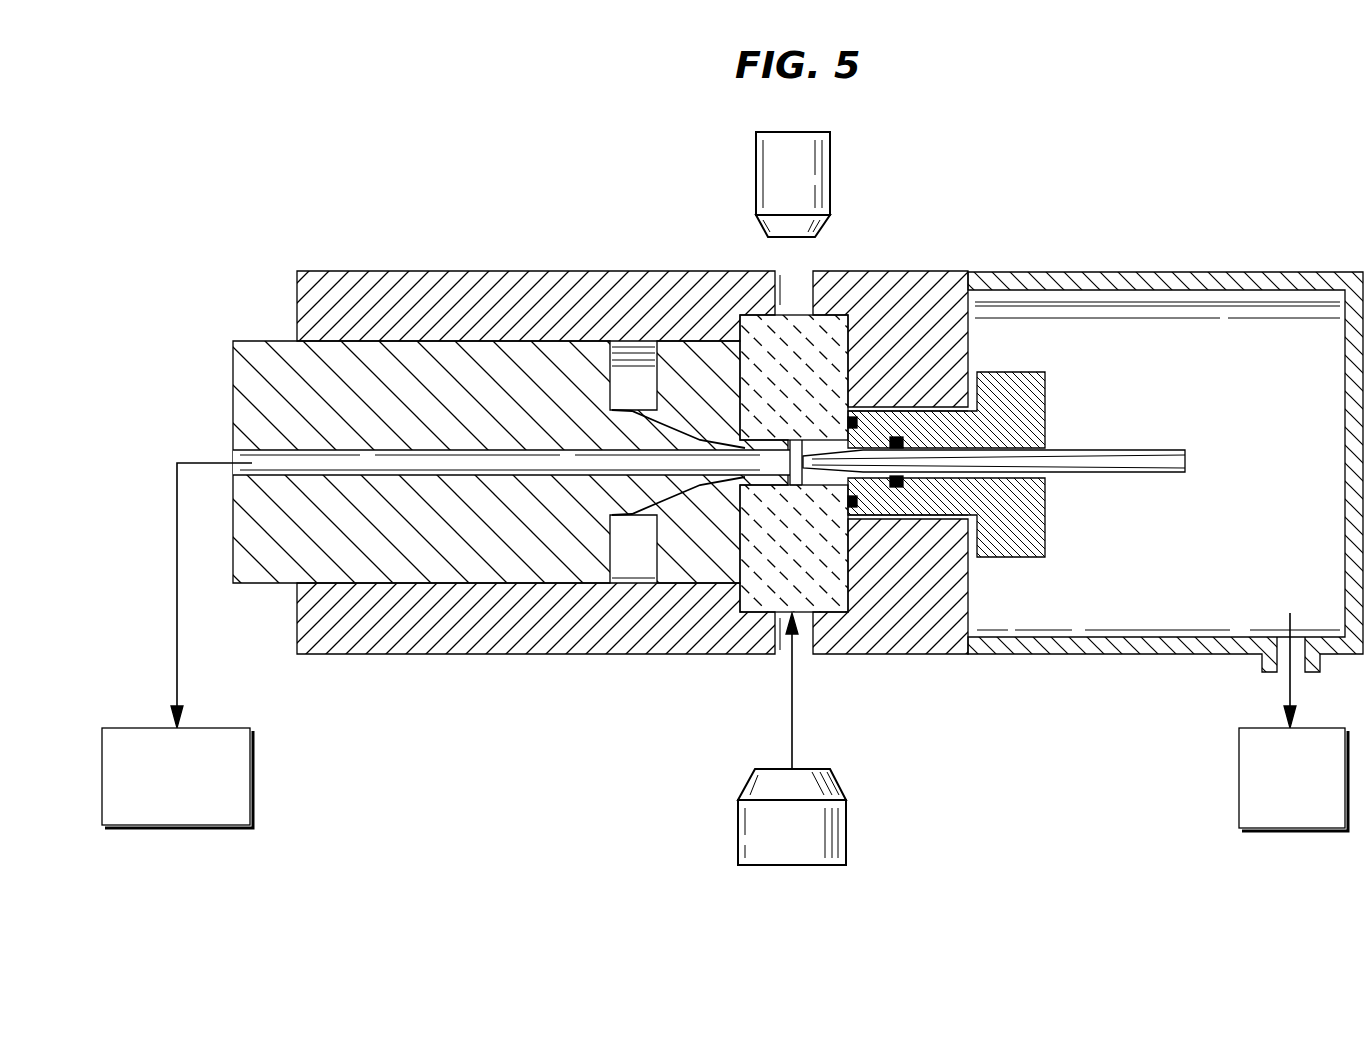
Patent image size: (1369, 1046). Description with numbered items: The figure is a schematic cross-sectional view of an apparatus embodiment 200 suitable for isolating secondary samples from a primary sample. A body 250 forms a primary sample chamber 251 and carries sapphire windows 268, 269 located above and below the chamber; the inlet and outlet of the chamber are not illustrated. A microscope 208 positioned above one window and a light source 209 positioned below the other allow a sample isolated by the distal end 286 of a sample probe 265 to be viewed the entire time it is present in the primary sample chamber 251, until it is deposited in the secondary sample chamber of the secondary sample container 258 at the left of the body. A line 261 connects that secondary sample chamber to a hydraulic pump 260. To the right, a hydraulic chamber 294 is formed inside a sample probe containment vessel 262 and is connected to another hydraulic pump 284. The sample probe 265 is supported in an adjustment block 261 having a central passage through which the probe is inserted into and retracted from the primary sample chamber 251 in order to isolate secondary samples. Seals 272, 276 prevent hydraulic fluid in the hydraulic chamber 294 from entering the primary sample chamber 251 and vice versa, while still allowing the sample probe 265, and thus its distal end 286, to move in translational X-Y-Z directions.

The apparatus embodiment 200 is at (1237, 209).
The microscope 208 is at (756, 170).
The light source 209 is at (846, 827).
The body 250 is at (430, 271).
The primary sample chamber 251 is at (815, 480).
The secondary sample container 258 is at (233, 375).
The hydraulic pump 260 is at (205, 791).
The line / adjustment block 261 is at (1023, 372).
The sample probe containment vessel 262 is at (1318, 272).
The sample probe 265 is at (1115, 449).
The sapphire window 268 is at (824, 385).
The sapphire window 269 is at (824, 568).
The seal 272 is at (857, 503).
The seal 276 is at (897, 437).
The hydraulic pump 284 is at (1321, 791).
The distal end 286 is at (808, 442).
The hydraulic chamber 294 is at (1269, 385).